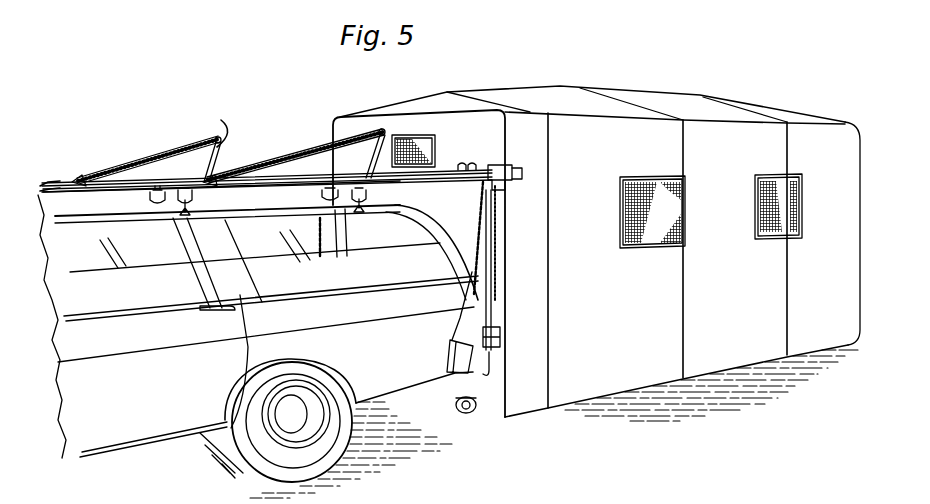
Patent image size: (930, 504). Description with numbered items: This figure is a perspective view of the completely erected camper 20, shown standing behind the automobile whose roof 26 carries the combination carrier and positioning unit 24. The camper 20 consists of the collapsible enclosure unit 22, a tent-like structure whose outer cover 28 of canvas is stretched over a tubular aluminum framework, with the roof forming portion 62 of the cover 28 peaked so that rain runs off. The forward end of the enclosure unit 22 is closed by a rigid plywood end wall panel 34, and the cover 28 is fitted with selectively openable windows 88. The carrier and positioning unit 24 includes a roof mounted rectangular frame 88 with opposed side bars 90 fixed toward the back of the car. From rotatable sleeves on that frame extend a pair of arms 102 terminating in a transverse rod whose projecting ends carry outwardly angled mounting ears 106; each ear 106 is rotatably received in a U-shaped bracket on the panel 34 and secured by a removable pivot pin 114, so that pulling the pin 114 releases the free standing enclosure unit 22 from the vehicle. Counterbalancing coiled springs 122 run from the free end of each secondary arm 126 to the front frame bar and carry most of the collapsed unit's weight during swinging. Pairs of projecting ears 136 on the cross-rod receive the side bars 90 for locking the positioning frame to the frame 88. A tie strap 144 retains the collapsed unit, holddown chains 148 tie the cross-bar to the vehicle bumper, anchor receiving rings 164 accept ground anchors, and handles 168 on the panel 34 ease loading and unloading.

The camper 20 is at (318, 113).
The collapsible enclosure unit 22 is at (565, 84).
The combination carrier and positioning unit 24 is at (146, 155).
The roof of automobile 26 is at (74, 200).
The outer cover 28 is at (622, 399).
The end wall panel 34 is at (443, 386).
The roof forming portion 62 is at (655, 102).
The roof mounted rectangular frame 88 is at (121, 198).
The side bars 90 is at (288, 183).
The arms 102 is at (460, 173).
The mounting ear 106 is at (500, 168).
The pivot pin 114 is at (520, 176).
The counterbalancing coiled springs 122 is at (273, 157).
The secondary arm 126 is at (222, 122).
The projecting ears 136 is at (465, 160).
The tie strap or rubber rope 144 is at (488, 358).
The holddown cables or chains 148 is at (478, 250).
The anchor receiving rings 164 is at (467, 414).
The handles 168 is at (530, 349).